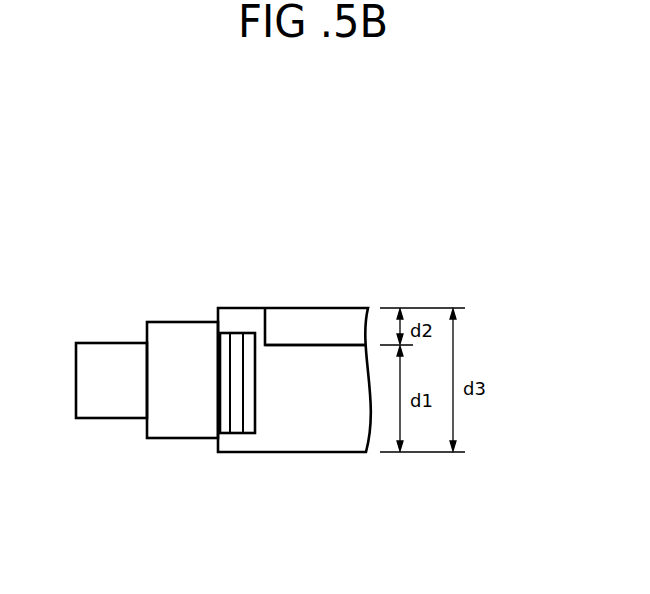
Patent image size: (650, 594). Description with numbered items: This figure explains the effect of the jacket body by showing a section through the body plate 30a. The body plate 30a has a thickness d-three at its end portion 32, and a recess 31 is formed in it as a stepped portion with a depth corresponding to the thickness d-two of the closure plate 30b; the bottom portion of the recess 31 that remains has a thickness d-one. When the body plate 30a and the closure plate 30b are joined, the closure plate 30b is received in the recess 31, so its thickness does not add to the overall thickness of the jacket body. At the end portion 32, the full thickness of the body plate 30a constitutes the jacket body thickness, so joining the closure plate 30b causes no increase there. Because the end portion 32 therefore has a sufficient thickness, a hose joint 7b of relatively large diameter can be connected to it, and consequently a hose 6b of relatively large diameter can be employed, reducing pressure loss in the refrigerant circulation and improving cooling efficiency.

The hose 6b is at (98, 355).
The hose joint 7b is at (172, 335).
The body plate 30a is at (310, 445).
The closure plate 30b is at (307, 313).
The recess 31 is at (281, 343).
The end portion 32 is at (243, 308).